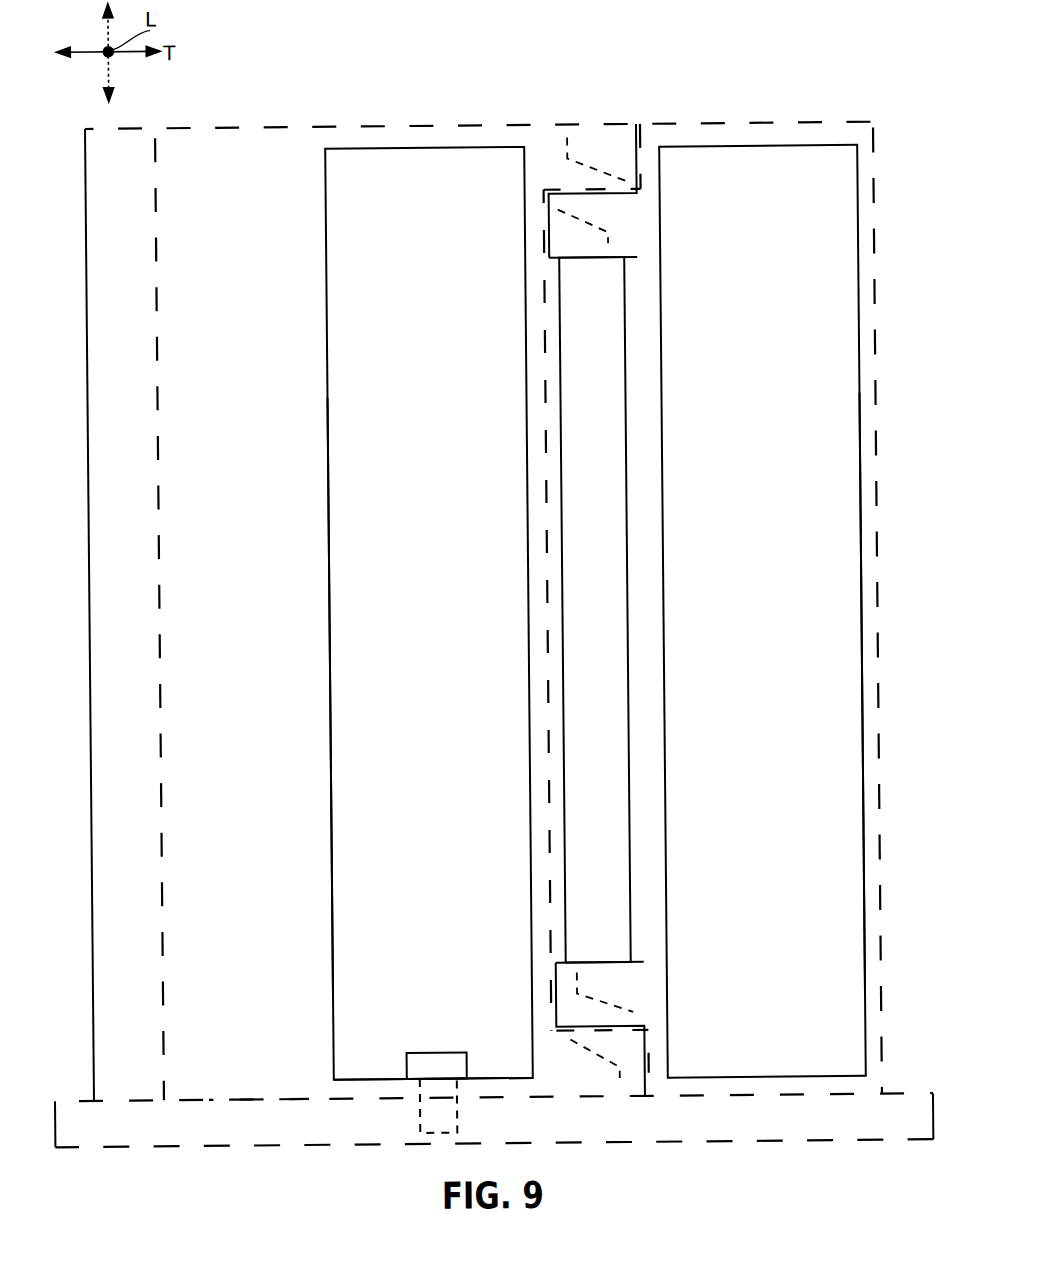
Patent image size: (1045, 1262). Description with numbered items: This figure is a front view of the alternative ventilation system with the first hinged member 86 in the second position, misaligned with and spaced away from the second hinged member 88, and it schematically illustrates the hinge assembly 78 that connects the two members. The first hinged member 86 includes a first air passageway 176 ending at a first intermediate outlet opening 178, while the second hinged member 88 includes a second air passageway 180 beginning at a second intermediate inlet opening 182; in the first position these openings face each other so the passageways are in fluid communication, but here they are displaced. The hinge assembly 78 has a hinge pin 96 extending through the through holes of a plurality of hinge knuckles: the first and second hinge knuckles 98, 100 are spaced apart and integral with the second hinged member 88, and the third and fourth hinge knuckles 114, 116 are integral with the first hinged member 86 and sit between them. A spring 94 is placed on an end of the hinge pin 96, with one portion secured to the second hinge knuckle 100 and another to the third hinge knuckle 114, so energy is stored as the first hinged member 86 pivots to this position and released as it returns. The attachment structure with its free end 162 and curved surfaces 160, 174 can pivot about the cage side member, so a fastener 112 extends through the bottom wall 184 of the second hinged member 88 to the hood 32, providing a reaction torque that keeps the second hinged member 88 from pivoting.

The hood 32 is at (781, 1137).
The hinge assembly 78 is at (589, 97).
The first hinged member 86 is at (864, 519).
The second hinged member 88 is at (268, 129).
The spring 94 is at (592, 170).
The hinge pin 96 is at (608, 525).
The first hinge knuckle 98 is at (591, 1077).
The second hinge knuckle 100 is at (557, 149).
The fastener 112 is at (428, 1061).
The third hinge knuckle 114 is at (609, 246).
The fourth hinge knuckle 116 is at (559, 1025).
The cylindrical curved inner surface 160 is at (241, 1077).
The free end 162 is at (159, 621).
The curved surface 174 is at (85, 705).
The first air passageway 176 is at (764, 656).
The first intermediate outlet opening 178 is at (855, 707).
The second air passageway 180 is at (448, 590).
The second intermediate inlet opening 182 is at (327, 724).
The bottom wall 184 is at (341, 1093).